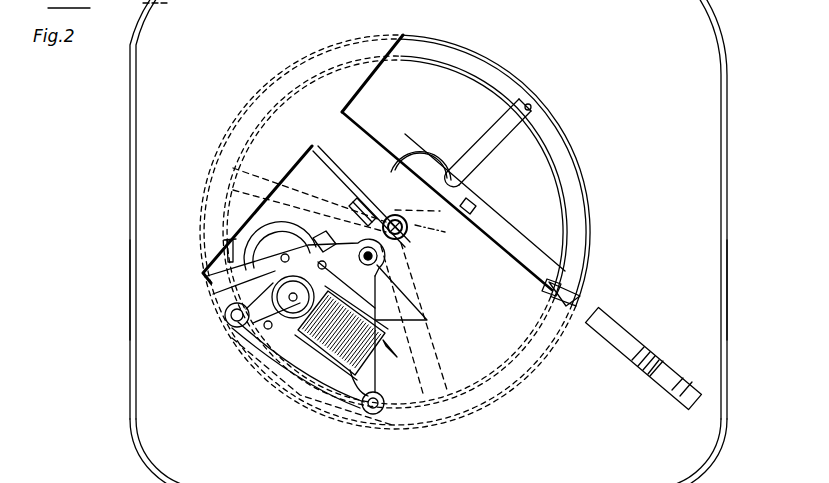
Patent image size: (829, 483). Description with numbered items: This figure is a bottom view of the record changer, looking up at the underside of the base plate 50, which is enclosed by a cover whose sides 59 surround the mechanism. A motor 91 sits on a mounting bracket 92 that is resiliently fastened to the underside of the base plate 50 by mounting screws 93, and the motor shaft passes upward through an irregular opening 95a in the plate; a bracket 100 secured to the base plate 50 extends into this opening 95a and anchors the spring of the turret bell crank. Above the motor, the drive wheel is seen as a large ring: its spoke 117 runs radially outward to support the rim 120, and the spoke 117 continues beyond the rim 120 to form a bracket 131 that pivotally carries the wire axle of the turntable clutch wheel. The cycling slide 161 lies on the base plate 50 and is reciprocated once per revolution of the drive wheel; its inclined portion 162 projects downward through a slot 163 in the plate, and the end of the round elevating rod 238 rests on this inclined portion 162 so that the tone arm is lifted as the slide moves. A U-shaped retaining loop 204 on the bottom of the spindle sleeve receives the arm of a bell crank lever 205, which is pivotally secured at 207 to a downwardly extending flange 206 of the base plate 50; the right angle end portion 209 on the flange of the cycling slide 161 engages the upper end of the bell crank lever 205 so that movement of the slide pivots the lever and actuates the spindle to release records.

The base member 50 is at (727, 182).
The sides 59 is at (130, 293).
The motor 91 is at (345, 384).
The mounting bracket 92 is at (347, 402).
The mounting screws 93 is at (234, 326).
The irregular opening 95a is at (224, 249).
The bracket 100 is at (224, 291).
The spoke 117 is at (490, 134).
The rim 120 is at (572, 161).
The bracket 131 is at (533, 108).
The cycling slide 161 is at (499, 238).
The inclined portion 162 is at (658, 388).
The slot 163 is at (625, 338).
The U-shaped retaining loop 204 is at (408, 221).
The bell crank lever 205 is at (412, 238).
The downwardly extending flange 206 is at (330, 165).
The pivot 207 is at (392, 212).
The right angle end portion 209 is at (353, 214).
The elevating rod 238 is at (652, 364).